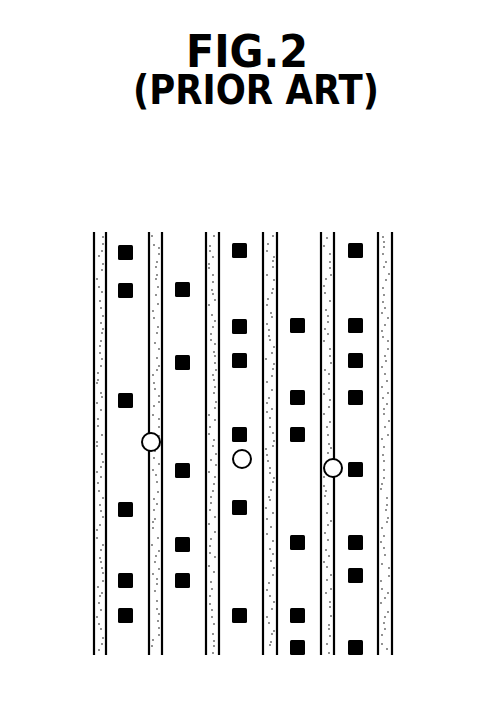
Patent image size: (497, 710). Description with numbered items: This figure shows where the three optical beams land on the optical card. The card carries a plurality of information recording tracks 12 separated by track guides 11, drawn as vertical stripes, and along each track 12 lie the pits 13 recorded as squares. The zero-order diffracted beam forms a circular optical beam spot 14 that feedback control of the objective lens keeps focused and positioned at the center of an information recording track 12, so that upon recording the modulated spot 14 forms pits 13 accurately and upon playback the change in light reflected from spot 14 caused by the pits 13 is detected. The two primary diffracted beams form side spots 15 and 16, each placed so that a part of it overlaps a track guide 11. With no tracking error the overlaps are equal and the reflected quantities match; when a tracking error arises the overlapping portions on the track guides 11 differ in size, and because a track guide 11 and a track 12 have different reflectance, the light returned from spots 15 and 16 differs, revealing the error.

The track guide 11 is at (154, 238).
The information recording track 12 is at (188, 252).
The pit 13 is at (355, 243).
The optical beam spot of zero-order diffracted light 14 is at (251, 461).
The primary diffracted optical beam spot 15 is at (142, 447).
The primary diffracted optical beam spot 16 is at (340, 460).